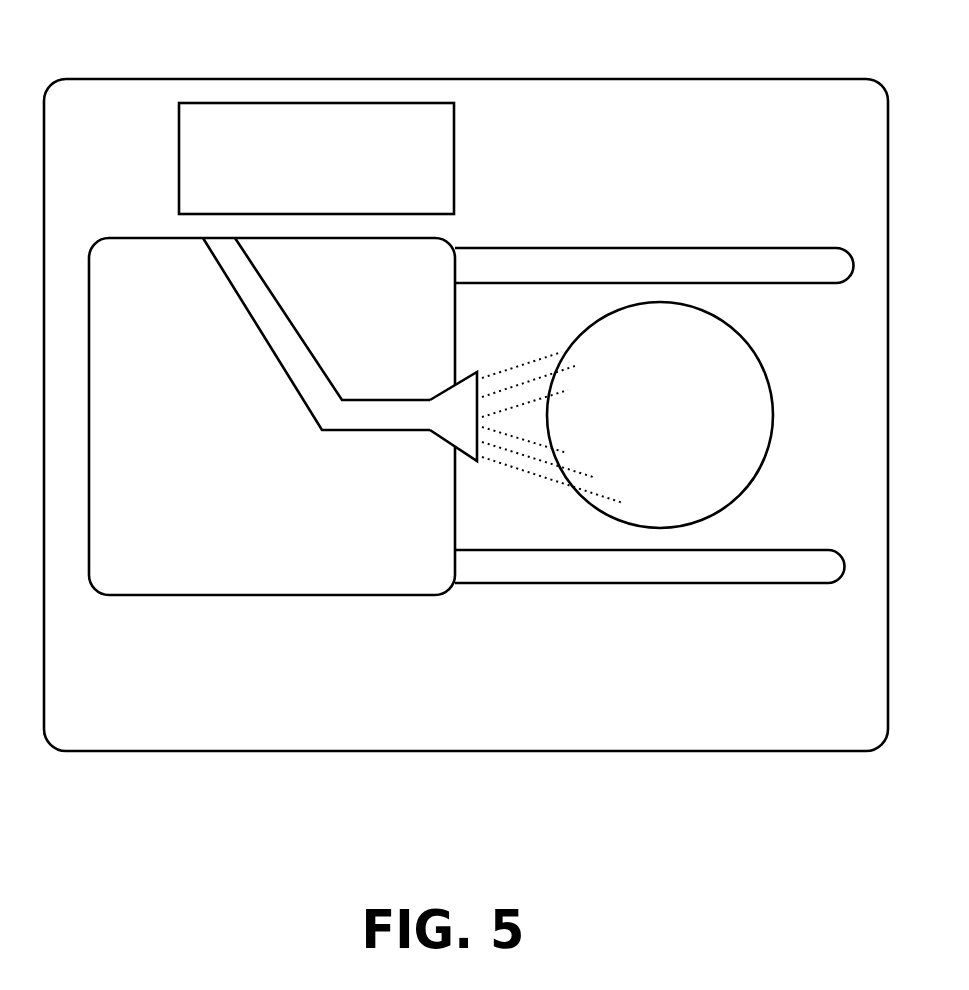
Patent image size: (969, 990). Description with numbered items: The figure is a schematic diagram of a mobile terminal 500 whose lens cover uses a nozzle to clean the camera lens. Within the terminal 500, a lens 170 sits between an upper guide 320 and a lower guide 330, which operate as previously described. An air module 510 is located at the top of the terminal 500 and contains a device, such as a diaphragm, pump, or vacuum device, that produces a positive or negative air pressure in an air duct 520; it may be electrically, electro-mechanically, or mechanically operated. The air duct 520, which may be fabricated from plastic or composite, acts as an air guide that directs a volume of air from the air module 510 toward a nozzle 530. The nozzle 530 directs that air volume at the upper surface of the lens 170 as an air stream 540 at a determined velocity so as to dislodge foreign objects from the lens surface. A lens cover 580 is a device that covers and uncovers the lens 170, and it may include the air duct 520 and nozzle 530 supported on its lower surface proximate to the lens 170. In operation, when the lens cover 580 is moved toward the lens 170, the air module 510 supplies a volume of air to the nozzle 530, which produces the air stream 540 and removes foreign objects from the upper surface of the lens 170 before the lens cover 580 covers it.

The terminal 500 is at (466, 385).
The air module 510 is at (316, 158).
The lens cover 580 is at (272, 443).
The air duct 520 is at (316, 362).
The nozzle 530 is at (428, 446).
The air stream 540 is at (542, 436).
The lens 170 is at (701, 415).
The upper guide 320 is at (654, 241).
The lower guide 330 is at (650, 596).